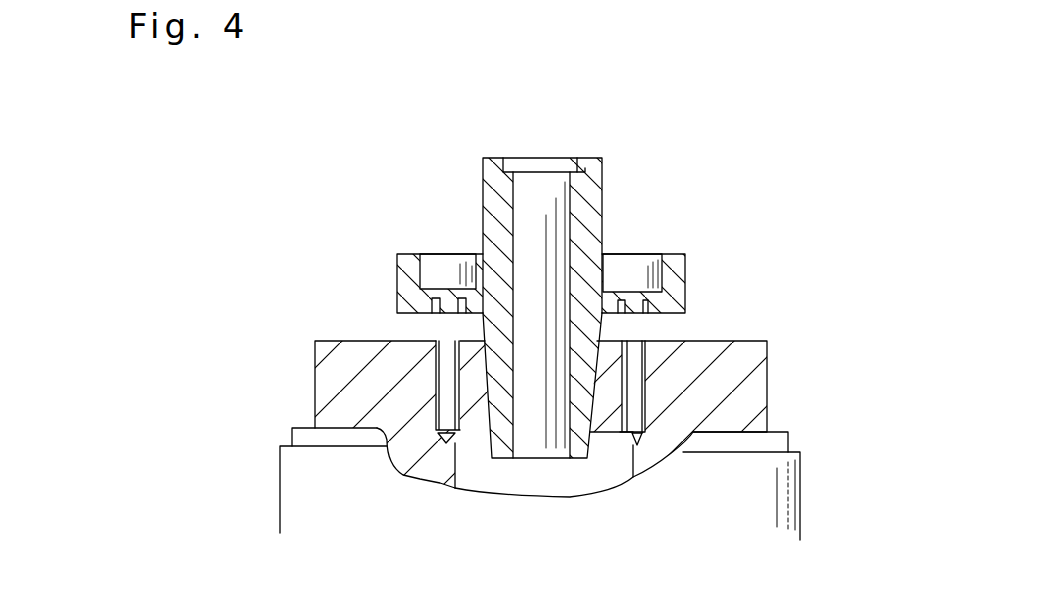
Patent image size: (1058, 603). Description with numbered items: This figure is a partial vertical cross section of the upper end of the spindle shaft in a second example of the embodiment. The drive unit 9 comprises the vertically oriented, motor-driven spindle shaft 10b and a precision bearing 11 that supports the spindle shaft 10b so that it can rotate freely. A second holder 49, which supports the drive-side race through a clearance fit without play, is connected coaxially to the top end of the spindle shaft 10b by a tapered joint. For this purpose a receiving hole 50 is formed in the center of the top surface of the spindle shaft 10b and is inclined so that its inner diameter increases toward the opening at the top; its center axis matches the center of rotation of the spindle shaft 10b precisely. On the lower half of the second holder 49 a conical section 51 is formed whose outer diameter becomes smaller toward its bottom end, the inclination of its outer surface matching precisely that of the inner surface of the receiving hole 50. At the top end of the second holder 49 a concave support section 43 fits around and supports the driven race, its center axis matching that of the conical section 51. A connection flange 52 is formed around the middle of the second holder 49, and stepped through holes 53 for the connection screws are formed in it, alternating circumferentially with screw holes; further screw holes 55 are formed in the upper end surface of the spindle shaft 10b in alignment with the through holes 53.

The concave support section 43 is at (573, 162).
The second holder 49 is at (590, 237).
The conical section 51 is at (587, 395).
The connection flange 52 is at (675, 260).
The stepped through holes 53 is at (437, 300).
The spindle shaft 10b is at (748, 377).
The receiving hole 50 is at (489, 364).
The screw holes 55 is at (437, 393).
The precision bearing 11 is at (312, 493).
The drive unit 9 is at (777, 505).